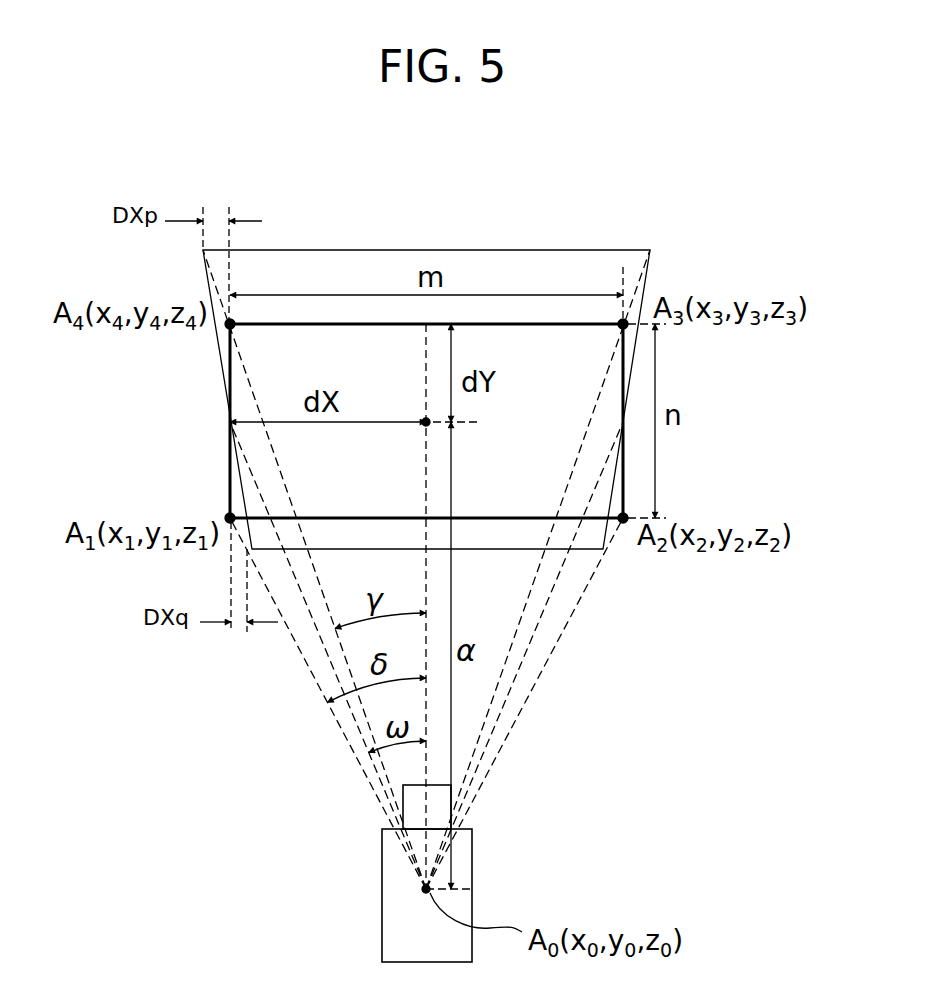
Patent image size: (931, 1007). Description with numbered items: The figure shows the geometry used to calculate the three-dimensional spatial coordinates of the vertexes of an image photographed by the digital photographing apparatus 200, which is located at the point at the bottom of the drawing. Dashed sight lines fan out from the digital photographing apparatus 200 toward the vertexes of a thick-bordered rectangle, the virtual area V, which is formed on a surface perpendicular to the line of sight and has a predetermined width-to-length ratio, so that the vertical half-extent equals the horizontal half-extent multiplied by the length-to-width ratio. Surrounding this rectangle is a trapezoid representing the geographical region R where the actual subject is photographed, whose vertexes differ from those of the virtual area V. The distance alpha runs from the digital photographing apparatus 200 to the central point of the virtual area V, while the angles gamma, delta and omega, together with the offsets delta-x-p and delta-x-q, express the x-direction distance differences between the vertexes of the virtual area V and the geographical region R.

The digital photographing apparatus 200 is at (382, 877).
The geographical region R is at (505, 249).
The virtual area V is at (221, 351).